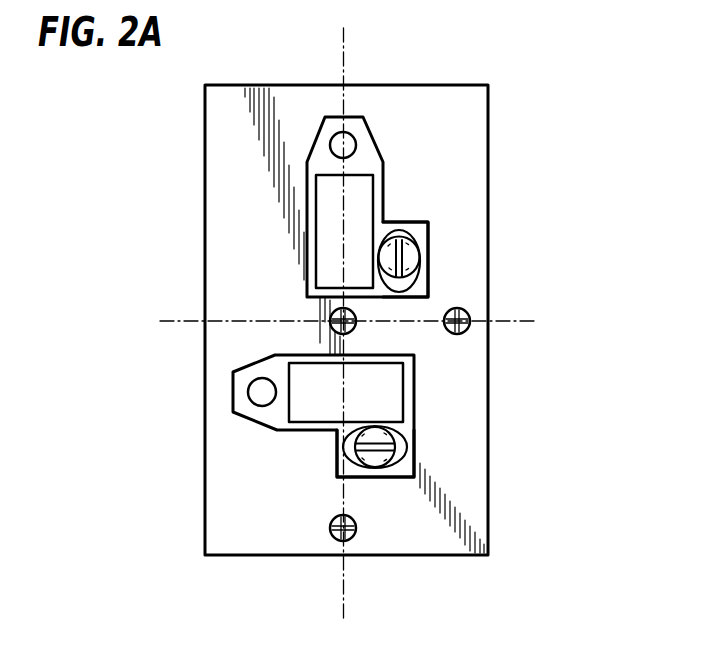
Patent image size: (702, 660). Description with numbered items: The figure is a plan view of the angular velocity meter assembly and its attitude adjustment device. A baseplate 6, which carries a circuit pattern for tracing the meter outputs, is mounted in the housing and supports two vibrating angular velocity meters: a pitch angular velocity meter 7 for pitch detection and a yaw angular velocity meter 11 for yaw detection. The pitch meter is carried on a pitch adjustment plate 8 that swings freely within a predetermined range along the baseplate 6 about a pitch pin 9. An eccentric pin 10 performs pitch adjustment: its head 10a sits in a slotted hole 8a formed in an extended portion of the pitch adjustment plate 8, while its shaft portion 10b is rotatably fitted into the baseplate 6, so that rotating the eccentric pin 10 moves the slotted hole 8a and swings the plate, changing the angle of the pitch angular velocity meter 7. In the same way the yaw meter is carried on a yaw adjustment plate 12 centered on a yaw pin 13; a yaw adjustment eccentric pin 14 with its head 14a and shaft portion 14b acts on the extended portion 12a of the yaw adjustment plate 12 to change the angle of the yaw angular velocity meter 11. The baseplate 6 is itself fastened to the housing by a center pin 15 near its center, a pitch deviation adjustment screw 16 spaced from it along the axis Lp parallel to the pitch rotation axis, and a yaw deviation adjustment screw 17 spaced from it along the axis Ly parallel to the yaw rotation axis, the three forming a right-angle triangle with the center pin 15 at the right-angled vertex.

The baseplate 6 is at (490, 158).
The pitch angular velocity meter 7 is at (313, 405).
The pitch adjustment plate 8 is at (232, 388).
The slotted hole 8a is at (407, 441).
The pitch pin 9 is at (262, 397).
The eccentric pin 10 is at (405, 543).
The head 10a is at (380, 462).
The shaft portion 10b is at (370, 462).
The yaw angular velocity meter 11 is at (325, 229).
The yaw adjustment plate 12 is at (315, 127).
The extended portion of yaw adjustment plate 12a is at (428, 282).
The yaw pin 13 is at (357, 142).
The yaw adjustment eccentric pin 14 is at (499, 239).
The head of yaw adjustment eccentric pin 14a is at (420, 258).
The shaft portion of yaw adjustment eccentric pin 14b is at (428, 253).
The center pin 15 is at (331, 317).
The pitch deviation adjustment screw 16 is at (467, 333).
The yaw deviation adjustment screw 17 is at (330, 537).
The Ly axis Ly is at (344, 53).
The Lp axis Lp is at (177, 322).